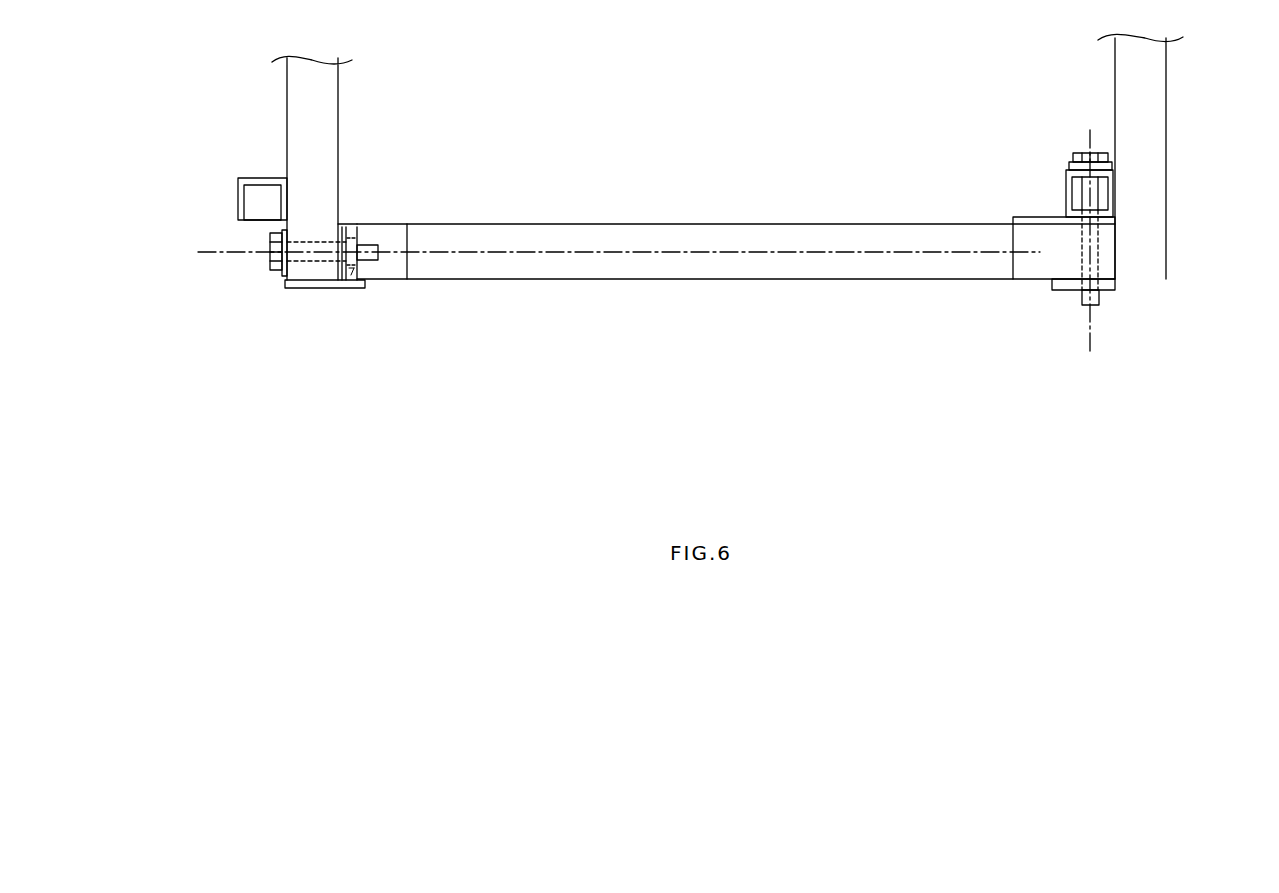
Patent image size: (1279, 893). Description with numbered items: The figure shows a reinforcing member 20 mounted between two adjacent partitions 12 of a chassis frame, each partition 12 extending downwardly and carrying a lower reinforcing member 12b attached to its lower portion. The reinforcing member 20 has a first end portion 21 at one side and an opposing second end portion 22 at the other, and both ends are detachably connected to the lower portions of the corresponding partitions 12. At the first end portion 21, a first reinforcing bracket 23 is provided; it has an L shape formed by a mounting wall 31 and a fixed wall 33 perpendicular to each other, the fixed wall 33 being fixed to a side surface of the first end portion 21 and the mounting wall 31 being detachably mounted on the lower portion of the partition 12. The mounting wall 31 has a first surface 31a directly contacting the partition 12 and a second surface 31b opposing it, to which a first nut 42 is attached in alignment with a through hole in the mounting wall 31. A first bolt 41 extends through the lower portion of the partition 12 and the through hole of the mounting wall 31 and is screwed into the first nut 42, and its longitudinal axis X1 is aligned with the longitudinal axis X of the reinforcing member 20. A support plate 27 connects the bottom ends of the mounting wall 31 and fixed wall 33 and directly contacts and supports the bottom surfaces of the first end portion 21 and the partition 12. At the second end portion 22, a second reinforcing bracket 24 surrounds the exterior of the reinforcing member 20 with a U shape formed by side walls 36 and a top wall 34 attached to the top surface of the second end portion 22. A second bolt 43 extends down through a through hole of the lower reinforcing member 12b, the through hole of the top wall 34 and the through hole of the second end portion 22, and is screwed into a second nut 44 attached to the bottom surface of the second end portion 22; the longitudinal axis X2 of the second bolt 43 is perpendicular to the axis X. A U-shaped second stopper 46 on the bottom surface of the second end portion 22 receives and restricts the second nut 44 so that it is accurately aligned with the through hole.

The partition 12 is at (342, 88).
The lower reinforcing member 12b is at (238, 197).
The reinforcing member 20 is at (843, 232).
The first end portion 21 is at (382, 288).
The second end portion 22 is at (1040, 283).
The first reinforcing bracket 23 is at (342, 290).
The second reinforcing bracket 24 is at (1008, 220).
The support plate 27 is at (313, 286).
The mounting wall 31 is at (382, 136).
The first surface 31a is at (335, 224).
The second surface 31b is at (356, 224).
The fixed wall 33 is at (398, 224).
The top wall 34 is at (1028, 217).
The side wall 36 is at (1032, 277).
The first bolt 41 is at (270, 263).
The first nut 42 is at (352, 272).
The second bolt 43 is at (1080, 190).
The second nut 44 is at (1074, 287).
The second stopper 46 is at (1060, 291).
The longitudinal axis of the reinforcing member X is at (676, 255).
The longitudinal axis of the first bolt X1 is at (214, 258).
The longitudinal axis of the second bolt X2 is at (1090, 353).